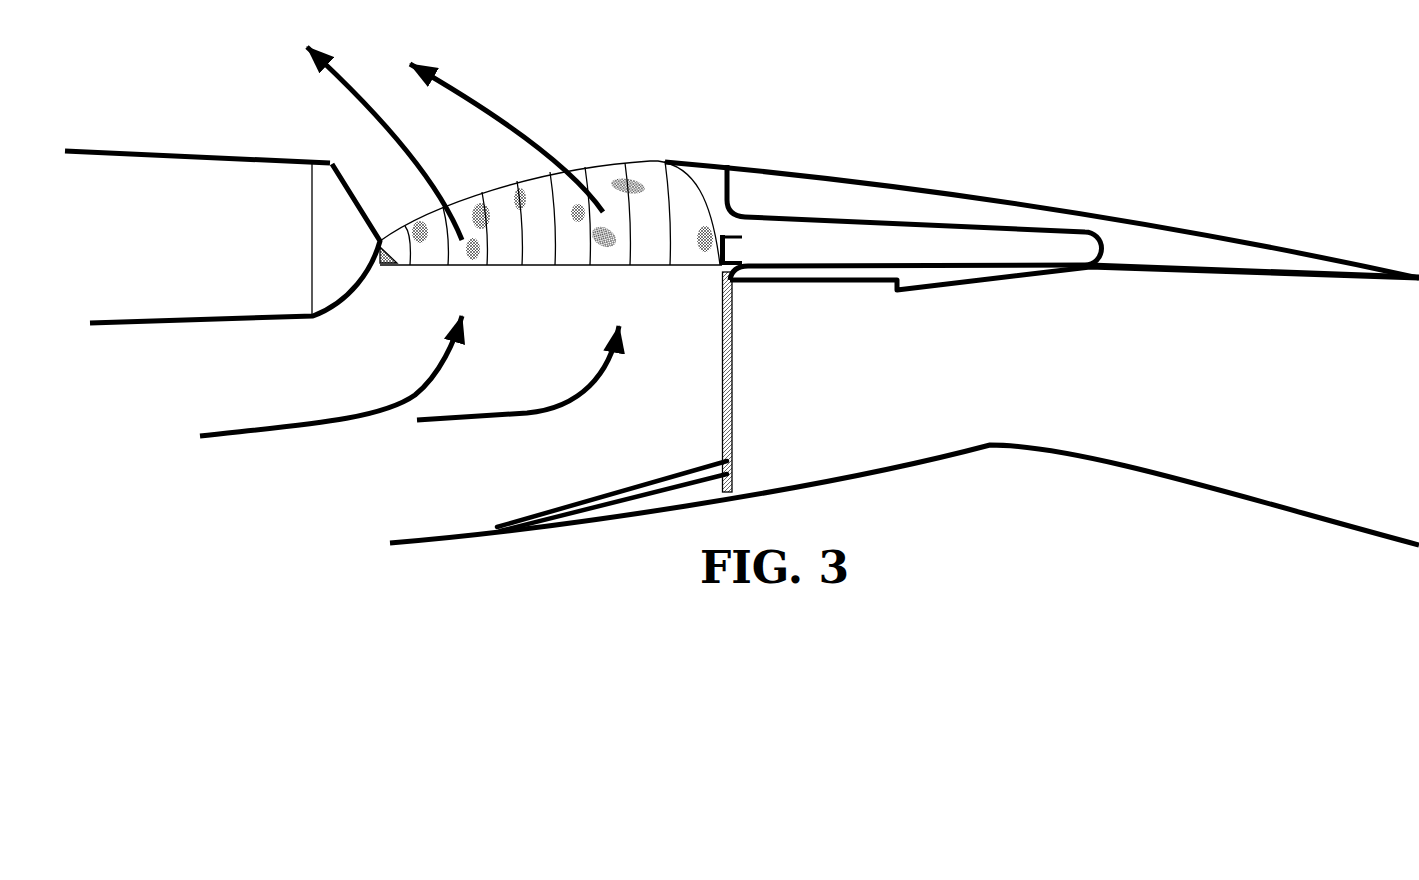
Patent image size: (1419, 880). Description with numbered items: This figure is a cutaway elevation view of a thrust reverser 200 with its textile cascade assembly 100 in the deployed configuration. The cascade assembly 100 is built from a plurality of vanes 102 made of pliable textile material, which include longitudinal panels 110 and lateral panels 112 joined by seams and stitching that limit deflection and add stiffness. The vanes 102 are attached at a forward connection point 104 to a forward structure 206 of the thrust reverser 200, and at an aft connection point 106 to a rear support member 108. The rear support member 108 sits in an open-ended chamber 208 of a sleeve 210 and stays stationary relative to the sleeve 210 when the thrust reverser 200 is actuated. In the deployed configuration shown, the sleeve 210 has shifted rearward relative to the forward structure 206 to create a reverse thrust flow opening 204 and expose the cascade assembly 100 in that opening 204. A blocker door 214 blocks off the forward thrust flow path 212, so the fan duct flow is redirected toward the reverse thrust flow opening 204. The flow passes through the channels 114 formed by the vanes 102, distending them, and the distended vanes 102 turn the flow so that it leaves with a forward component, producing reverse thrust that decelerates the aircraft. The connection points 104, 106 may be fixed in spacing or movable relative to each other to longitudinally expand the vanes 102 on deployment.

The cascade assembly 100 is at (531, 241).
The plurality of vanes 102 is at (580, 278).
The forward connection point 104 is at (384, 226).
The aft connection point 106 is at (716, 276).
The rear support member 108 is at (752, 248).
The longitudinal panels 110 is at (547, 188).
The lateral panels 112 is at (560, 247).
The channels 114 is at (562, 235).
The thrust reverser 200 is at (784, 128).
The reverse thrust flow opening 204 is at (389, 293).
The forward structure 206 is at (314, 148).
The open-ended chamber 208 is at (1048, 240).
The sleeve 210 is at (950, 192).
The forward thrust flow path 212 is at (1048, 402).
The blocker door 214 is at (752, 432).